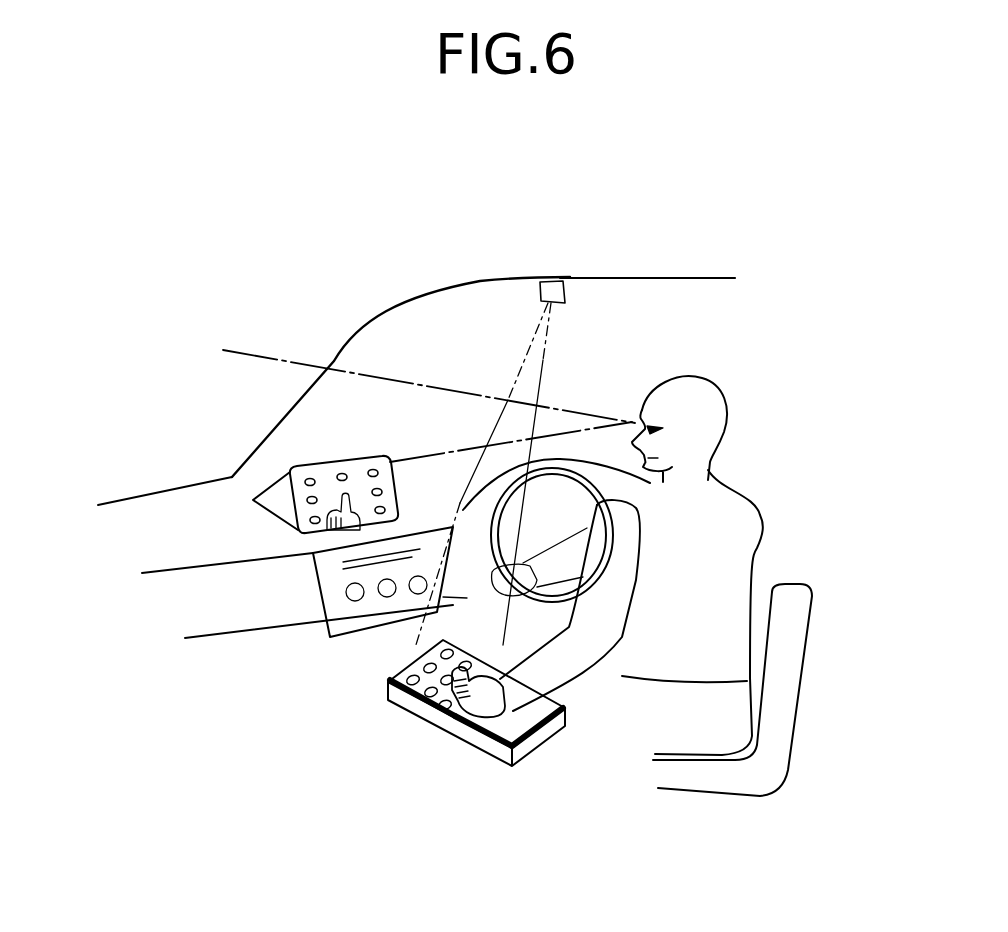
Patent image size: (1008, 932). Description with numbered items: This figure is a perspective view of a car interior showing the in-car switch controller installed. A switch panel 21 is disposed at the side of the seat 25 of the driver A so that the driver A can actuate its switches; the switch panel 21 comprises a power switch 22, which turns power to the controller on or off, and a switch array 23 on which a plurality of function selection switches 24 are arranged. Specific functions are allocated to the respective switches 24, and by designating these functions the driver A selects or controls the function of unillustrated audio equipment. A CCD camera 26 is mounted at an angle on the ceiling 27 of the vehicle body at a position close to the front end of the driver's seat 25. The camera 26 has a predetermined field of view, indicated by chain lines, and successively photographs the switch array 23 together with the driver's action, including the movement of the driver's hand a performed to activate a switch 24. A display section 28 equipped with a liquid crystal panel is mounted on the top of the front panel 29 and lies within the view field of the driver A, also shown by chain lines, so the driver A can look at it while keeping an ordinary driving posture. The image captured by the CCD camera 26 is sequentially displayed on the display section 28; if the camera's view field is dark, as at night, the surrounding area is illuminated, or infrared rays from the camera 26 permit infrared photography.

The switch panel 21 is at (436, 735).
The power switch 22 is at (431, 726).
The switch array 23 is at (422, 702).
The function selection switch 24 is at (395, 670).
The seat 25 is at (807, 635).
The CCD camera 26 is at (565, 292).
The ceiling 27 is at (688, 280).
The display section 28 is at (320, 458).
The front panel 29 is at (277, 597).
The driver A is at (760, 520).
The driver's hand a is at (501, 705).